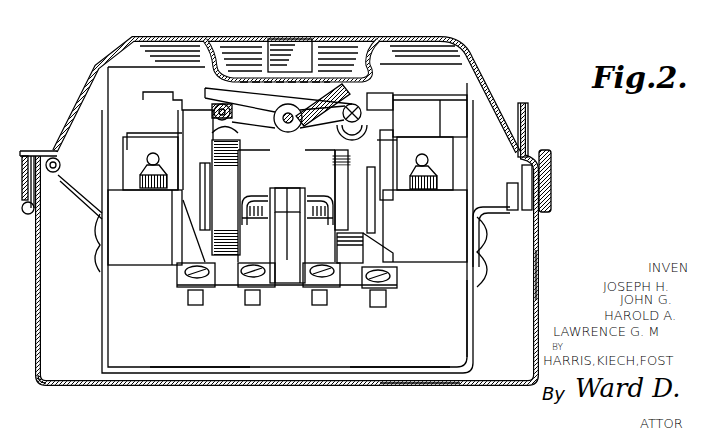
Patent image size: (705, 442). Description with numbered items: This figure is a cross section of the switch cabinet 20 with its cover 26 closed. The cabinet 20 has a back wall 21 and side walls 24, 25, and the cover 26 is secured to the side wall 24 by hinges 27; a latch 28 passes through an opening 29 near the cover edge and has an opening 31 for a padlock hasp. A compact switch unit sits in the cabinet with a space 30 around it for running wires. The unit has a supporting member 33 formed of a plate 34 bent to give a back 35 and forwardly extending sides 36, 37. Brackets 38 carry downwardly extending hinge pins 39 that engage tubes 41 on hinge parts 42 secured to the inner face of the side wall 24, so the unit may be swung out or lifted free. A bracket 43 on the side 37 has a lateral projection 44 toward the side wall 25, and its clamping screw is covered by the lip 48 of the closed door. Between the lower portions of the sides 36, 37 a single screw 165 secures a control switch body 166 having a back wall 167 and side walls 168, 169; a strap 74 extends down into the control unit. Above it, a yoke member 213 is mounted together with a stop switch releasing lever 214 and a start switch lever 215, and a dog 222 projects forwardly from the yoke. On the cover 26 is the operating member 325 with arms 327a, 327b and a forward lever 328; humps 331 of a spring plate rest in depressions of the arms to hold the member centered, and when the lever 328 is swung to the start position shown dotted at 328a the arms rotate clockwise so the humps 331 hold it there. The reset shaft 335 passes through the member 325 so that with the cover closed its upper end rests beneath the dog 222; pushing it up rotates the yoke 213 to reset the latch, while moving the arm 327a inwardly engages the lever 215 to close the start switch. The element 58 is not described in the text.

The switch cabinet 20 is at (135, 388).
The back wall 21 is at (415, 387).
The side wall 24 is at (37, 362).
The side wall 25 is at (541, 268).
The cover 26 is at (92, 72).
The hinges 27 is at (24, 212).
The latch 28 is at (535, 127).
The opening 29 is at (533, 147).
The space 30 is at (342, 318).
The opening 31 is at (535, 100).
The supporting member 33 is at (475, 323).
The plate 34 is at (257, 375).
The back 35 is at (193, 373).
The side 36 is at (103, 260).
The side 37 is at (477, 293).
The brackets 38 is at (80, 203).
The hinge pins 39 is at (52, 150).
The tubes 41 is at (62, 167).
The hinge parts 42 is at (47, 207).
The bracket 43 is at (473, 240).
The lateral projection 44 is at (495, 210).
The lip 48 is at (551, 178).
The top wall recess 58 is at (126, 80).
The strap 74 is at (283, 230).
The screw 165 is at (293, 378).
The control switch body 166 is at (387, 342).
The back wall 167 is at (470, 350).
The side wall 168 is at (138, 285).
The side wall 169 is at (473, 146).
The yoke member 213 is at (375, 115).
The stop switch releasing lever 214 is at (227, 190).
The start switch lever 215 is at (362, 192).
The dog 222 is at (330, 150).
The control switch operating member 325 is at (288, 77).
The arm 327a is at (355, 95).
The arm 327b is at (235, 110).
The lever 328 is at (277, 50).
The start position of lever 328a is at (323, 80).
The humps 331 is at (385, 93).
The reset shaft 335 is at (255, 150).